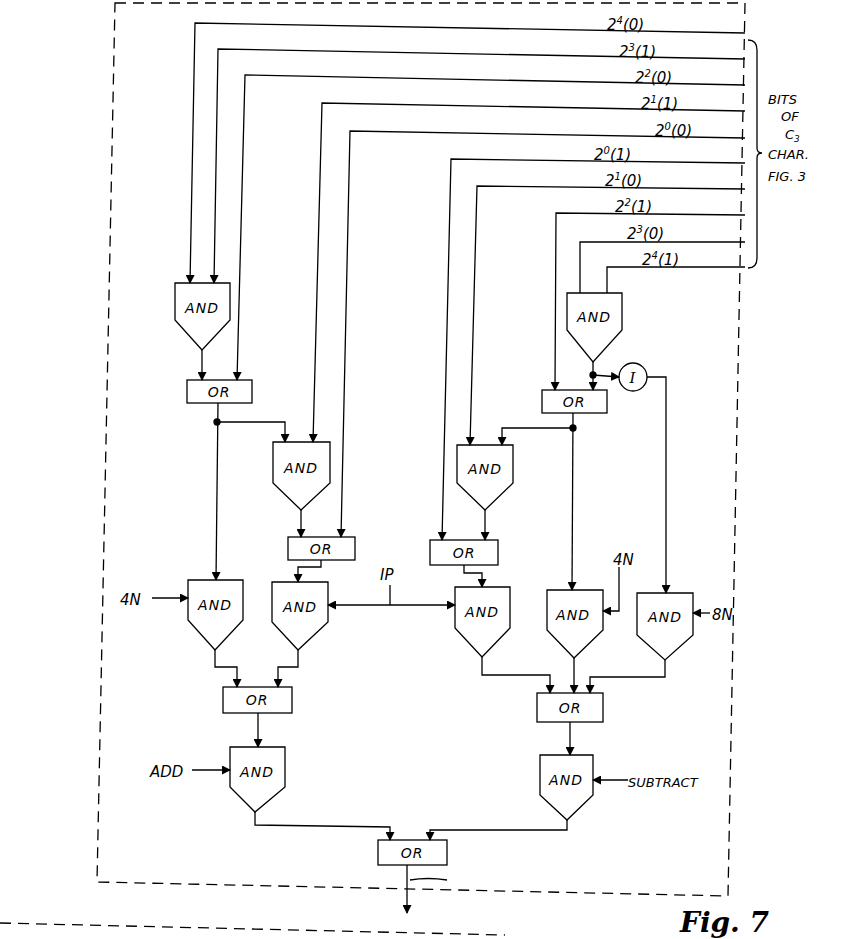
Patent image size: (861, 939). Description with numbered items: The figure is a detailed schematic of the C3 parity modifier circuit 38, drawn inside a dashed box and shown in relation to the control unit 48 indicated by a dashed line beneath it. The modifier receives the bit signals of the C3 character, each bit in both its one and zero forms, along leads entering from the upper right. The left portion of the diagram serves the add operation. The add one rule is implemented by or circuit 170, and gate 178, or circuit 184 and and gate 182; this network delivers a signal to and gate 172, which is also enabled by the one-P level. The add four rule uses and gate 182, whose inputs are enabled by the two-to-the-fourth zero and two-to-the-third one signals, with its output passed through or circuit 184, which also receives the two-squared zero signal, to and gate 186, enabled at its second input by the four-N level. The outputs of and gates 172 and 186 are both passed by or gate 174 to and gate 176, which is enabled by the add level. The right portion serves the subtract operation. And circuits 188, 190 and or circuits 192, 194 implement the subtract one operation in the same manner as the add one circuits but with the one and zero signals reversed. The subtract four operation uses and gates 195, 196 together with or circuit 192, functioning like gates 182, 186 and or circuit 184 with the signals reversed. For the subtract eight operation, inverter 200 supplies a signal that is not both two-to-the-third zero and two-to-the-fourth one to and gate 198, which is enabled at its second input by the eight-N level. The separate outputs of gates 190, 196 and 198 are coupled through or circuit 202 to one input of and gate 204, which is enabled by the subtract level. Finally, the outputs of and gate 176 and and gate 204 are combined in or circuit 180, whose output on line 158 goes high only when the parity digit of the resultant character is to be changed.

The C3 parity modifier circuit 38 is at (112, 157).
The control unit 48 is at (58, 923).
The output line 158 is at (407, 877).
The or circuit 170 is at (288, 548).
The and gate 172 is at (321, 630).
The or gate 174 is at (293, 700).
The and gate 176 is at (285, 760).
The and gate 178 is at (284, 495).
The or circuit 180 is at (378, 855).
The and gate 182 is at (175, 300).
The or circuit 184 is at (187, 390).
The and gate 186 is at (200, 634).
The and circuit 188 is at (514, 468).
The and circuit 190 is at (470, 643).
The or circuit 192 is at (542, 396).
The or circuit 194 is at (500, 552).
The and gate 195 is at (623, 312).
The and gate 196 is at (560, 644).
The and gate 198 is at (682, 593).
The inverter 200 is at (648, 368).
The or circuit 202 is at (605, 708).
The and gate 204 is at (595, 762).